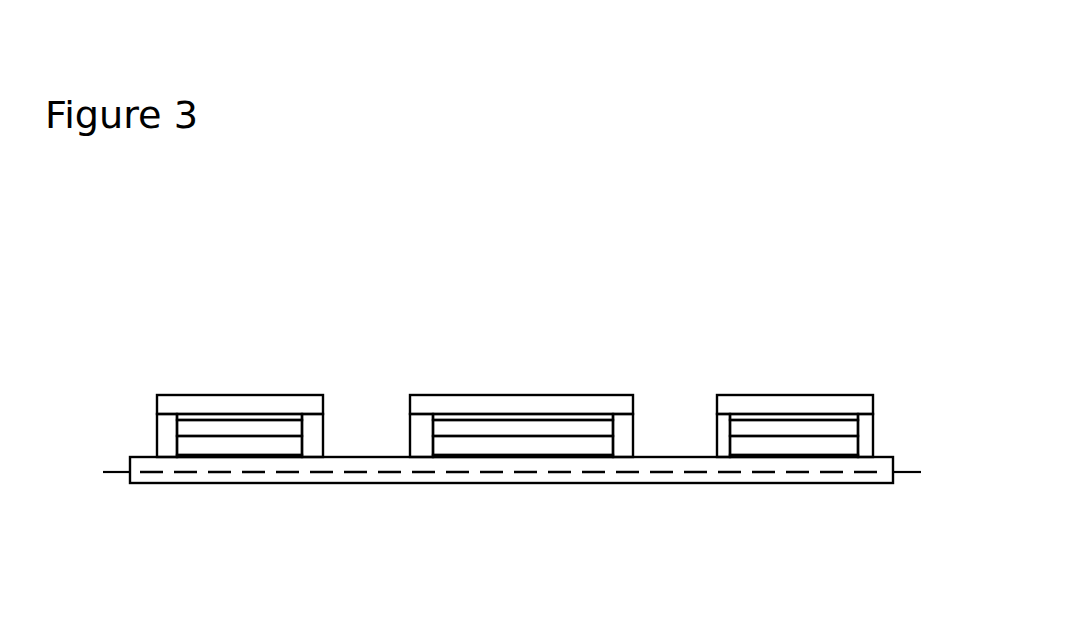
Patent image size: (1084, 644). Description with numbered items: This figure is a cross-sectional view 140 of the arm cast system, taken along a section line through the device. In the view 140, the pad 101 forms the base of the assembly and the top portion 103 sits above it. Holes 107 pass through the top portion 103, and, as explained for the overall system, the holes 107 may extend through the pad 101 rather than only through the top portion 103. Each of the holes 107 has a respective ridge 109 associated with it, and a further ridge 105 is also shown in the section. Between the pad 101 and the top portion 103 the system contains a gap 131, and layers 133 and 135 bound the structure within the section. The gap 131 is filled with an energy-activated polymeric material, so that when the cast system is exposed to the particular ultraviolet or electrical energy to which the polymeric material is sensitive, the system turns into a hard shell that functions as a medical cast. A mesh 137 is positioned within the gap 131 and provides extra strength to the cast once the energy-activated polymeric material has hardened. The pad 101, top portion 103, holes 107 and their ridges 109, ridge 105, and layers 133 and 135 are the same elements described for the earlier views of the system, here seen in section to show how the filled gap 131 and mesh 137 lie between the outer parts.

The pad 101 is at (195, 483).
The top portion 103 is at (217, 395).
The ridge 105 is at (155, 438).
The holes 107 is at (364, 400).
The ridges 109 is at (410, 437).
The gap 131 is at (242, 445).
The layer 133 is at (248, 412).
The layer 135 is at (265, 460).
The mesh 137 is at (211, 440).
The cross-sectional view 140 is at (525, 224).